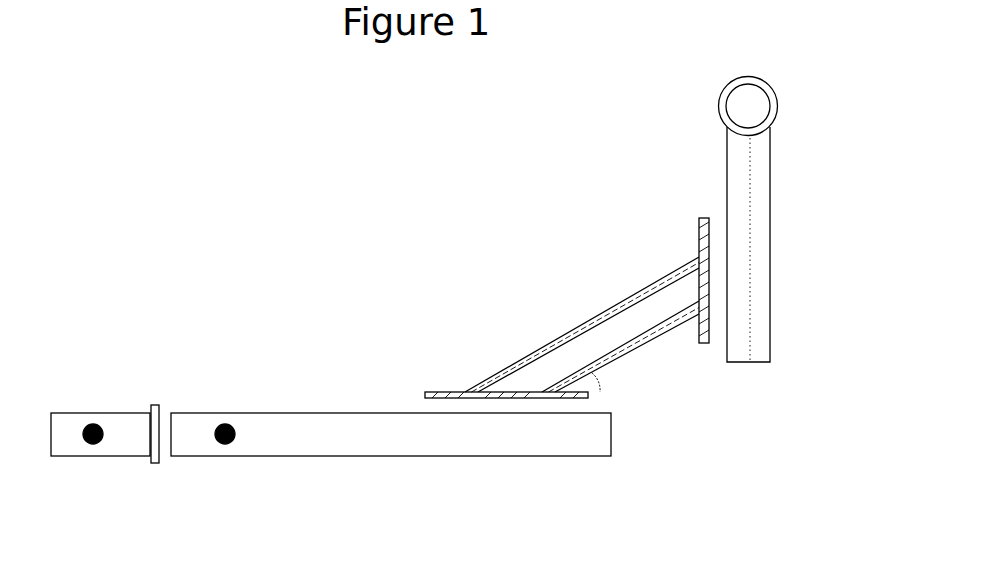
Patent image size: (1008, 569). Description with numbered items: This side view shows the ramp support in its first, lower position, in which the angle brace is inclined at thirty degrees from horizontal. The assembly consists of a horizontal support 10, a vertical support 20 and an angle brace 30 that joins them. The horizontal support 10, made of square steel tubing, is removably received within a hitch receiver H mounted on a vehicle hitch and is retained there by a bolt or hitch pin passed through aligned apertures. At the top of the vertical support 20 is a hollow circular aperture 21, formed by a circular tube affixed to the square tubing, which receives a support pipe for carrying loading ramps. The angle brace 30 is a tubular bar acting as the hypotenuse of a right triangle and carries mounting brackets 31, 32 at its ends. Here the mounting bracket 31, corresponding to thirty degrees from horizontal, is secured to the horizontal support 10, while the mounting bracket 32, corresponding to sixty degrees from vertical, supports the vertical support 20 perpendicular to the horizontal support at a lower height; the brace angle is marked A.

The horizontal support 10 is at (397, 435).
The vertical support 20 is at (748, 242).
The hollow circular aperture 21 is at (748, 105).
The angle brace 30 is at (600, 338).
The mounting bracket 31 is at (423, 393).
The mounting bracket 32 is at (697, 212).
The hitch receiver H is at (126, 437).
The brace angle A is at (602, 380).